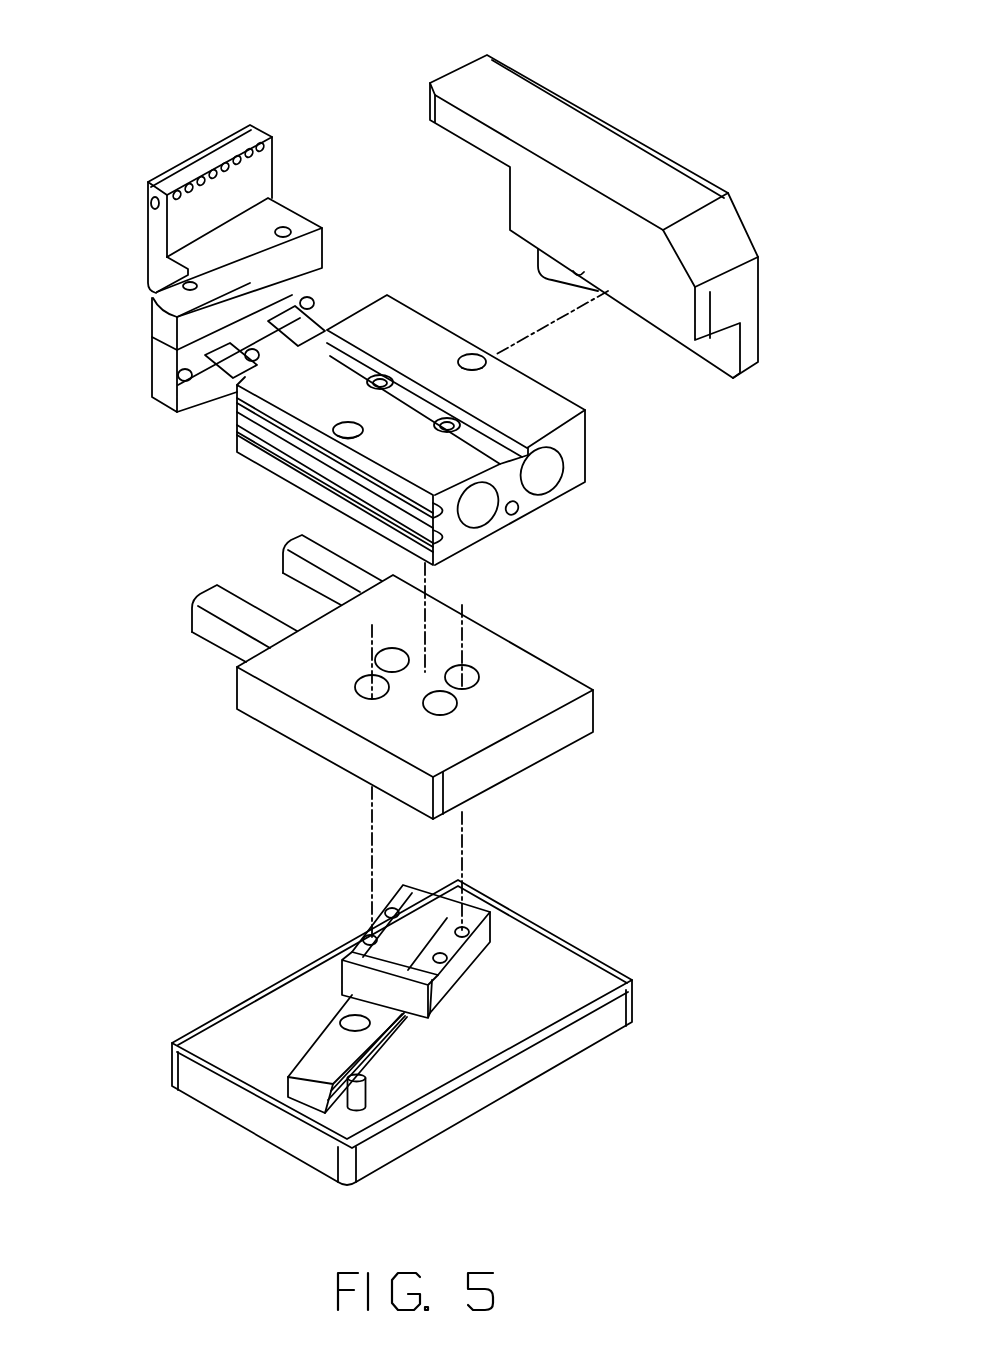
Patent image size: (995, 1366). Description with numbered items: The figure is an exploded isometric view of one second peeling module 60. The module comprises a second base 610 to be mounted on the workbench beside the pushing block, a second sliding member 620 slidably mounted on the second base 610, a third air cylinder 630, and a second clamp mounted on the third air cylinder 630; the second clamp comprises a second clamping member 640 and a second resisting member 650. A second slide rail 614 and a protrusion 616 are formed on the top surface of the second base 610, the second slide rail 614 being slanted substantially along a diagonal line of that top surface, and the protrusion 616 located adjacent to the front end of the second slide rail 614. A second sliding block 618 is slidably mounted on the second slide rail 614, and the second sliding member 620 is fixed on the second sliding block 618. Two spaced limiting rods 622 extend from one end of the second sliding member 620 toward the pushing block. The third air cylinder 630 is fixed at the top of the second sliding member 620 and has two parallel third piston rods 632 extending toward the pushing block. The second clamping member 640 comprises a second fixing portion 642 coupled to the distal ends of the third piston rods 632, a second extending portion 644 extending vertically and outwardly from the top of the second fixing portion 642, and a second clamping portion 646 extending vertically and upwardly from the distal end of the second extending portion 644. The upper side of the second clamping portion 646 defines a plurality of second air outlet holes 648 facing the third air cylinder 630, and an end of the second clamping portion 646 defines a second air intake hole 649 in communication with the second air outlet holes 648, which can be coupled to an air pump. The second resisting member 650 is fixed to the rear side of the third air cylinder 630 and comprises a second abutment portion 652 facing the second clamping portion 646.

The second peeling module 60 is at (282, 33).
The second base 610 is at (505, 1088).
The second slide rail 614 is at (306, 1097).
The protrusion 616 is at (362, 1092).
The second sliding block 618 is at (470, 955).
The second sliding member 620 is at (585, 718).
The limiting rods 622 is at (216, 634).
The third air cylinder 630 is at (585, 460).
The third piston rods 632 is at (308, 330).
The second clamping member 640 is at (177, 150).
The second fixing portion 642 is at (163, 373).
The second extending portion 644 is at (270, 225).
The second clamping portion 646 is at (205, 209).
The second air outlet holes 648 is at (264, 151).
The second air intake hole 649 is at (150, 206).
The second resisting member 650 is at (639, 204).
The second abutment portion 652 is at (504, 85).